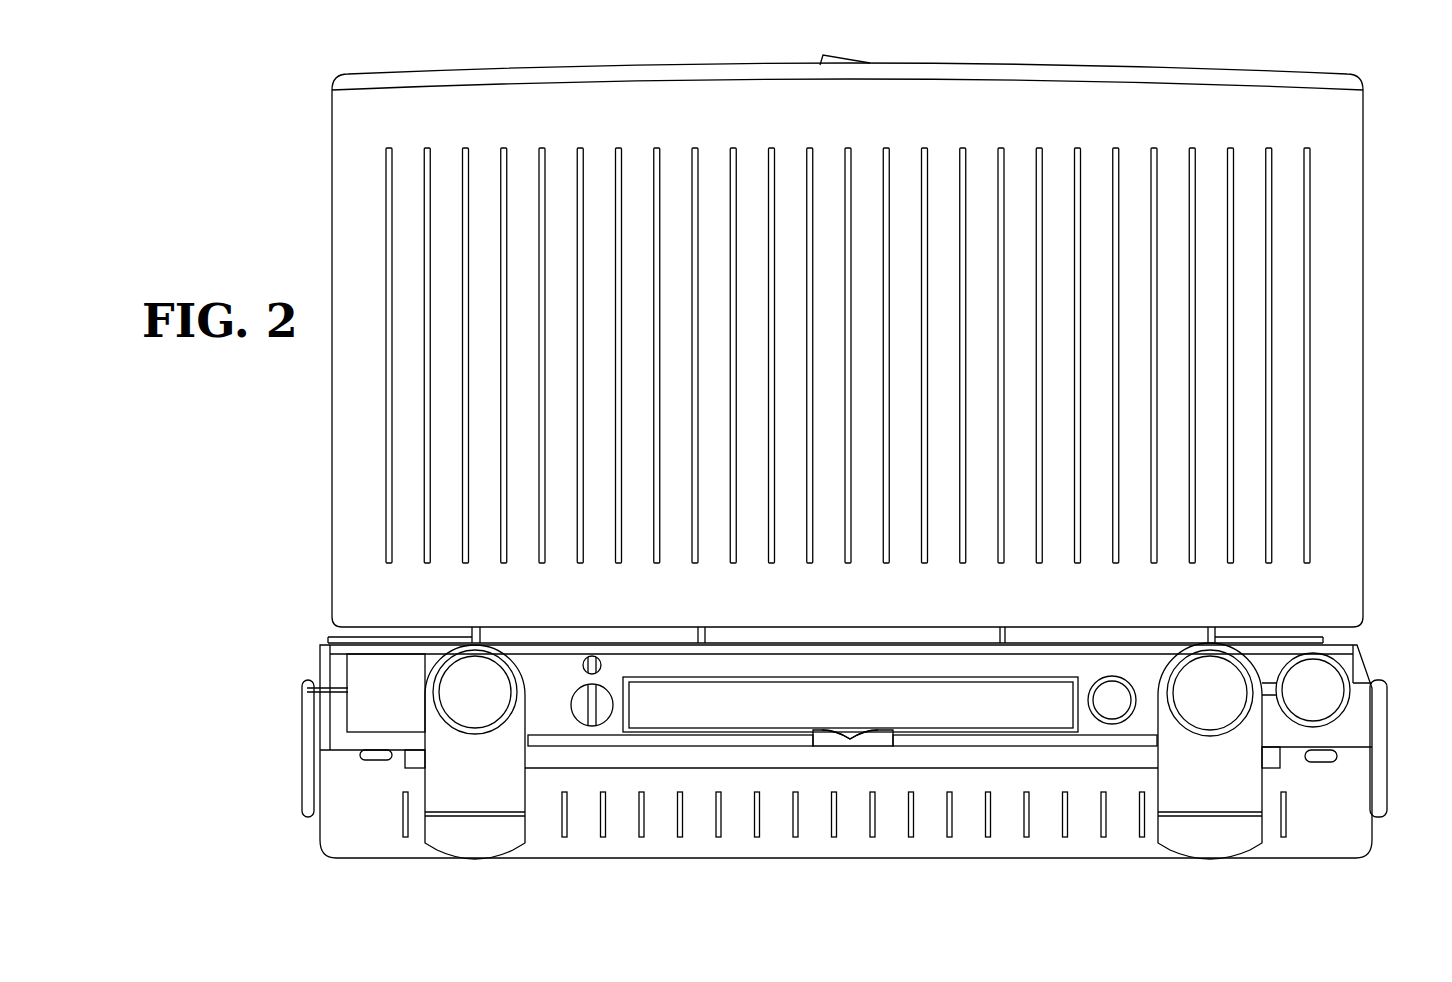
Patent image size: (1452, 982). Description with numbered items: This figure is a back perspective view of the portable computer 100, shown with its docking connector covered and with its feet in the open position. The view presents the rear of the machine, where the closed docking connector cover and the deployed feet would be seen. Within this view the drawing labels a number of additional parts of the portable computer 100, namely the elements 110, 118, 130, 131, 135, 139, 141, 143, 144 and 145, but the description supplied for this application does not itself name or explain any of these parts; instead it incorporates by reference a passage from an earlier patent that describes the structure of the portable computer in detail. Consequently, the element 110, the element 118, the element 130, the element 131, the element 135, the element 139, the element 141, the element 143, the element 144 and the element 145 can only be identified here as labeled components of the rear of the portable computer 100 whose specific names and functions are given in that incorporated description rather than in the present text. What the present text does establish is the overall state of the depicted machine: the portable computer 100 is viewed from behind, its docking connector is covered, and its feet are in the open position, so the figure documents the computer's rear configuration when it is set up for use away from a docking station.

The portable computer 100 is at (232, 62).
The display housing (lid) 110 is at (357, 123).
The latch tab 118 is at (826, 57).
The base housing 130 is at (290, 654).
The media bay slot 131 is at (763, 710).
The latch recess 135 is at (850, 732).
The connector port 139 is at (1320, 682).
The button / port 141 is at (1108, 702).
The connector slot 143 is at (365, 700).
The control knob 144 is at (602, 705).
The hinge housing 145 is at (460, 780).